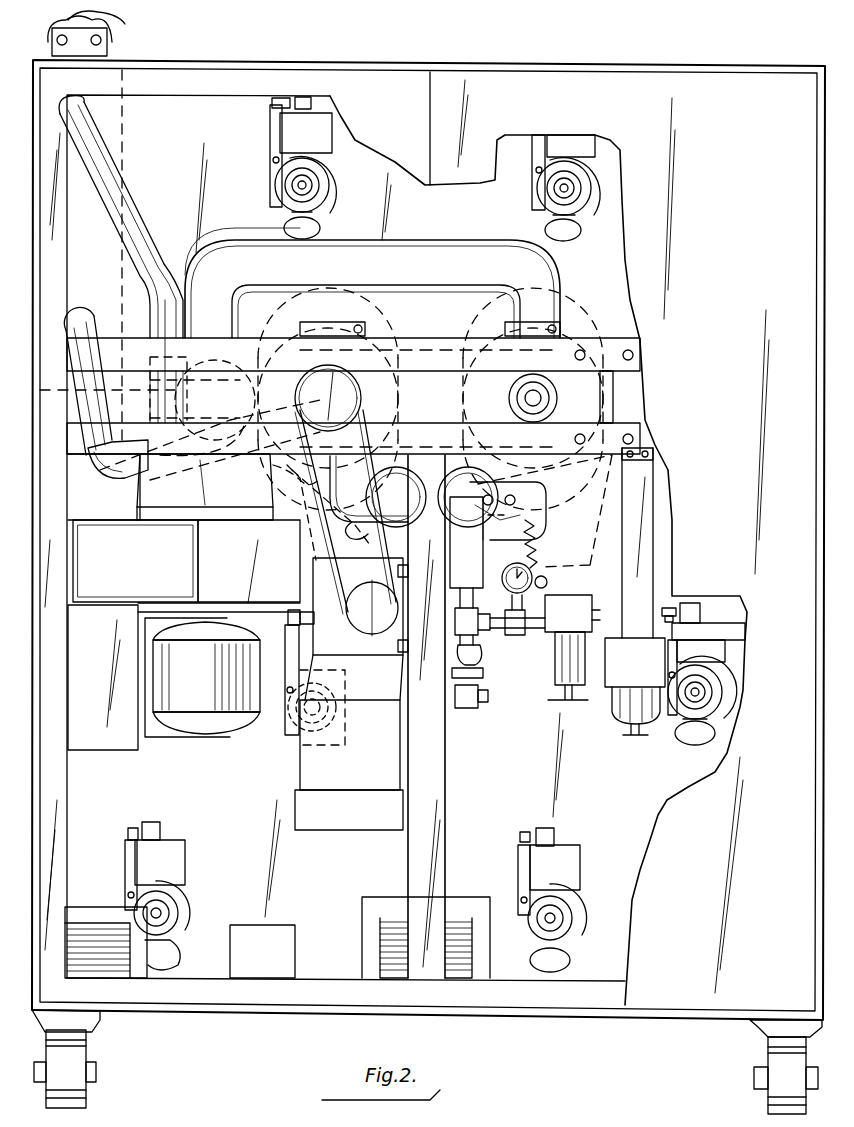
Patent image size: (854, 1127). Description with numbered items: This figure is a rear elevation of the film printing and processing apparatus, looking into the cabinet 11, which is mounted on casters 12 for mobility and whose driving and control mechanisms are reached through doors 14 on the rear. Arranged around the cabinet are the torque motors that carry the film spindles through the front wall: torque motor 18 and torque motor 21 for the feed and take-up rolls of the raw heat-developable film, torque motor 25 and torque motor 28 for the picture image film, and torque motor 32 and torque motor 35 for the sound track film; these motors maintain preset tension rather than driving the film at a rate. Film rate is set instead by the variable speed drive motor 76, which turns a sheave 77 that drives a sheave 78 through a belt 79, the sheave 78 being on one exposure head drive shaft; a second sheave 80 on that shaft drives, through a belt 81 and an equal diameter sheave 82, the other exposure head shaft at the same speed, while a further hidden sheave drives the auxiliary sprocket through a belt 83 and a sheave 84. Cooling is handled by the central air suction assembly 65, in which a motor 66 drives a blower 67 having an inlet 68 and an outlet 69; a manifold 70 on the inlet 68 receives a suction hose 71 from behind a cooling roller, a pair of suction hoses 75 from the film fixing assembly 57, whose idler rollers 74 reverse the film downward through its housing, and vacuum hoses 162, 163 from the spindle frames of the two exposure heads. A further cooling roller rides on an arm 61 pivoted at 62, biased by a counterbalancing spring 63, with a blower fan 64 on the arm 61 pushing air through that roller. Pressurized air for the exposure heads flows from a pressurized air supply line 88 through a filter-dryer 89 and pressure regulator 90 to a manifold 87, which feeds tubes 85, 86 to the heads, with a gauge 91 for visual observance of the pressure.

The cabinet 11 is at (205, 70).
The casters 12 is at (80, 1092).
The doors 14 is at (732, 146).
The torque motor 18 is at (532, 188).
The torque motor 21 is at (270, 175).
The torque motor 25 is at (730, 718).
The torque motor 28 is at (580, 895).
The torque motor 32 is at (287, 735).
The torque motor 35 is at (180, 905).
The film fixing assembly 57 is at (128, 126).
The arm 61 is at (480, 482).
The pivot 62 is at (500, 540).
The counterbalancing spring 63 is at (530, 545).
The blower fan 64 is at (375, 480).
The central air suction assembly 65 is at (124, 506).
The motor 66 is at (180, 730).
The blower 67 is at (212, 566).
The inlet 68 is at (155, 505).
The outlet 69 is at (134, 562).
The manifold 70 is at (224, 490).
The suction hose 71 is at (215, 335).
The idler rollers 74 is at (110, 36).
The suction hoses 75 is at (130, 205).
The variable speed drive motor 76 is at (308, 822).
The sheave 77 is at (378, 630).
The sheave 78 is at (366, 384).
The belt 79 is at (290, 480).
The sheave 80 is at (362, 398).
The belt 81 is at (448, 338).
The sheave 82 is at (508, 400).
The belt 83 is at (118, 432).
The sheave 84 is at (95, 462).
The tube 85 is at (556, 490).
The tube 86 is at (356, 526).
The manifold 87 is at (492, 575).
The pressurized air supply line 88 is at (745, 625).
The filter-dryer 89 is at (615, 702).
The pressure regulator 90 is at (548, 652).
The gauge 91 is at (548, 583).
The vacuum hose 162 is at (447, 240).
The vacuum hose 163 is at (258, 238).